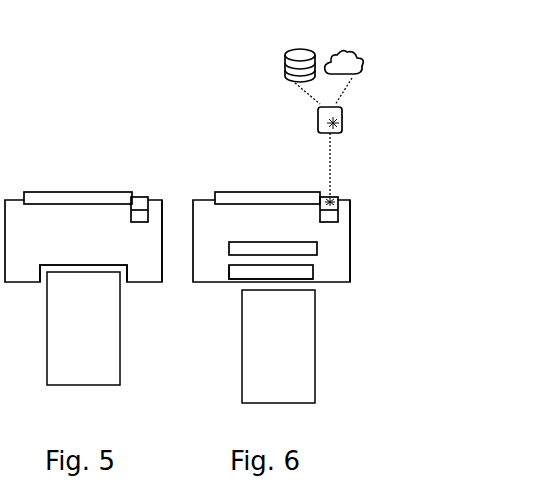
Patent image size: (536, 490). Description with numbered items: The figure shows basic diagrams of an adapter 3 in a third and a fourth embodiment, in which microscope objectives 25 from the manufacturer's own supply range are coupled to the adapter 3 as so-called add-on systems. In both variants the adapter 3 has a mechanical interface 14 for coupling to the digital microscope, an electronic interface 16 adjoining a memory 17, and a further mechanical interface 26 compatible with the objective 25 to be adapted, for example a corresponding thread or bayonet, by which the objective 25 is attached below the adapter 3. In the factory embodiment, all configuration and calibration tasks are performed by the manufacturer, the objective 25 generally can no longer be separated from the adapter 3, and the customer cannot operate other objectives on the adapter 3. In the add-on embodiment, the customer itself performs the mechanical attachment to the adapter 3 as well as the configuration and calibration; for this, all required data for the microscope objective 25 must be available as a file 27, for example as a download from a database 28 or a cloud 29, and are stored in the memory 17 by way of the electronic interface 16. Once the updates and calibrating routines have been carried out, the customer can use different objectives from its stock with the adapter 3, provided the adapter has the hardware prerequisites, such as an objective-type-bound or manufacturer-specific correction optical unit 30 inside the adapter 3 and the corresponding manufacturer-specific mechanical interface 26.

In FIG. 5, the adapter 3 is at (233, 222).
In FIG. 6, the adapter 3 is at (233, 222).
In FIG. 5, the mechanical interface 14 is at (83, 198).
In FIG. 6, the mechanical interface 14 is at (273, 198).
In FIG. 5, the electronic interface 16 is at (139, 197).
In FIG. 6, the electronic interface 16 is at (327, 195).
In FIG. 5, the memory 17 is at (148, 213).
In FIG. 6, the memory 17 is at (340, 208).
In FIG. 5, the microscope objective 25 is at (253, 323).
In FIG. 6, the microscope objective 25 is at (253, 323).
In FIG. 5, the mechanical interface 26 is at (227, 278).
In FIG. 6, the mechanical interface 26 is at (227, 278).
In FIG. 6, the file 27 is at (318, 118).
In FIG. 6, the database 28 is at (290, 46).
In FIG. 6, the cloud 29 is at (347, 50).
In FIG. 6, the correction optical unit 30 is at (316, 255).